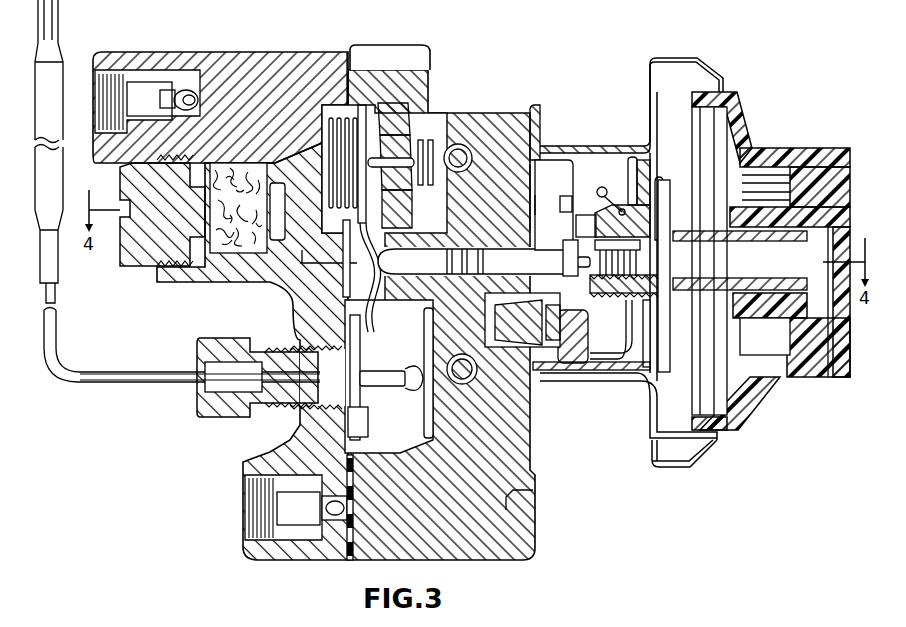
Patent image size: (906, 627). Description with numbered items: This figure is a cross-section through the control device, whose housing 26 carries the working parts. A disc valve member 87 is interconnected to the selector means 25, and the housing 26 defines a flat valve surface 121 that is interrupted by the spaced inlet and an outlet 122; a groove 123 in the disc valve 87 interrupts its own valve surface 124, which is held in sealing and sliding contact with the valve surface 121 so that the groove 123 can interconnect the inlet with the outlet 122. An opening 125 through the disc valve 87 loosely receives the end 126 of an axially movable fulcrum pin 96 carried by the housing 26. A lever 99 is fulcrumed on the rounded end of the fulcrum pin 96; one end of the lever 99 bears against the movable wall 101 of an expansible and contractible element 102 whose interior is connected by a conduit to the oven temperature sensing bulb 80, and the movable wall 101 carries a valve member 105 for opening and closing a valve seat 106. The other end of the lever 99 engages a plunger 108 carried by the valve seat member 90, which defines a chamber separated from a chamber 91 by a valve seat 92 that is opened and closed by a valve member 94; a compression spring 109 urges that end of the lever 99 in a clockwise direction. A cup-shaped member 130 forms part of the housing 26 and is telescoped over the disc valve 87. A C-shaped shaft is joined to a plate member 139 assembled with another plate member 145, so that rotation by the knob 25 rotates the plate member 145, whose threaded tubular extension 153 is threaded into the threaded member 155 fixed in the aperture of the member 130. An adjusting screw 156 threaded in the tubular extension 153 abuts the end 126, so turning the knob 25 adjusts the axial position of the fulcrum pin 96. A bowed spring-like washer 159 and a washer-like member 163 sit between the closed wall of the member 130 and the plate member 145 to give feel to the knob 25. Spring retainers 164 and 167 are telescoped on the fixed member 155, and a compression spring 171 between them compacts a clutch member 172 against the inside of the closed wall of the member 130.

The selector means 25 is at (752, 156).
The housing 26 is at (535, 470).
The oven temperature sensing bulb 80 is at (66, 66).
The disc valve member 87 is at (550, 158).
The valve seat member 90 is at (412, 198).
The chamber 91 is at (430, 205).
The valve seat 92 is at (437, 187).
The valve member 94 is at (438, 176).
The fulcrum pin 96 is at (513, 264).
The lever 99 is at (352, 232).
The movable wall 101 is at (366, 420).
The expansible and contractible element 102 is at (334, 438).
The valve member 105 is at (424, 334).
The valve seat 106 is at (433, 421).
The plunger 108 is at (405, 142).
The compression spring 109 is at (330, 141).
The flat valve surface 121 is at (532, 181).
The outlet 122 is at (521, 368).
The groove 123 is at (580, 372).
The valve surface 124 is at (535, 205).
The opening 125 is at (596, 222).
The end of fulcrum pin 126 is at (562, 258).
The cup-shaped member 130 is at (584, 146).
The plate member 139 is at (670, 342).
The plate member 145 is at (672, 318).
The tubular extension 153 is at (530, 320).
The threaded member 155 is at (593, 210).
The adjusting screw 156 is at (640, 232).
The bowed spring-like washer 159 is at (652, 188).
The washer-like member 163 is at (664, 190).
The spring retainer 164 is at (537, 180).
The spring retainer 167 is at (628, 358).
The compression spring 171 is at (606, 190).
The clutch member 172 is at (647, 358).